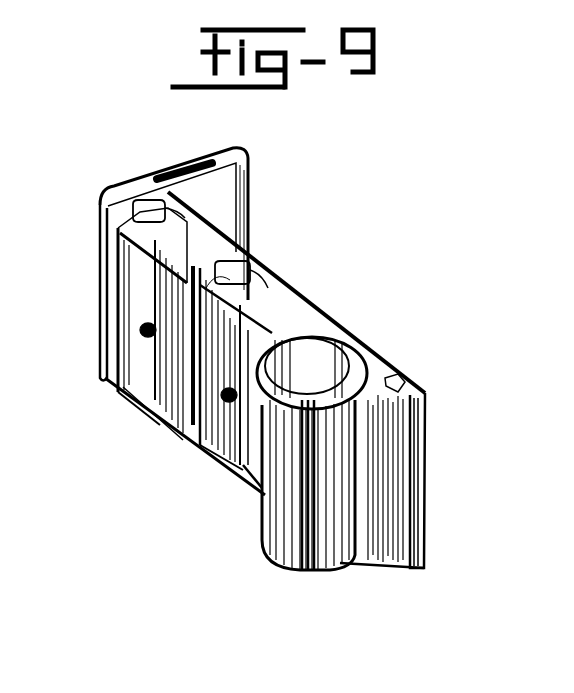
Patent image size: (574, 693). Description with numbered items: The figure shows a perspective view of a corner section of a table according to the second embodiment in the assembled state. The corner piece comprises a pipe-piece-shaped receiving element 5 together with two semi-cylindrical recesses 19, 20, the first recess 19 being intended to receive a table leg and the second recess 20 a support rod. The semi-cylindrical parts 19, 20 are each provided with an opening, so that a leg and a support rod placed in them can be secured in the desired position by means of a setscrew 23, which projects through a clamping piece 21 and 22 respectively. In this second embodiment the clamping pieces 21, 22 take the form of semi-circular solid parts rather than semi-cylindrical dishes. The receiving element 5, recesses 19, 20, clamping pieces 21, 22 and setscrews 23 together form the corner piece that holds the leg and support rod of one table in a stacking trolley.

The receiving element 5 is at (352, 560).
The semi-cylindrical recess 19 is at (232, 211).
The semi-cylindrical recess 20 is at (266, 279).
The clamping piece 21 is at (146, 398).
The clamping piece 22 is at (241, 462).
The setscrew 23 is at (146, 330).